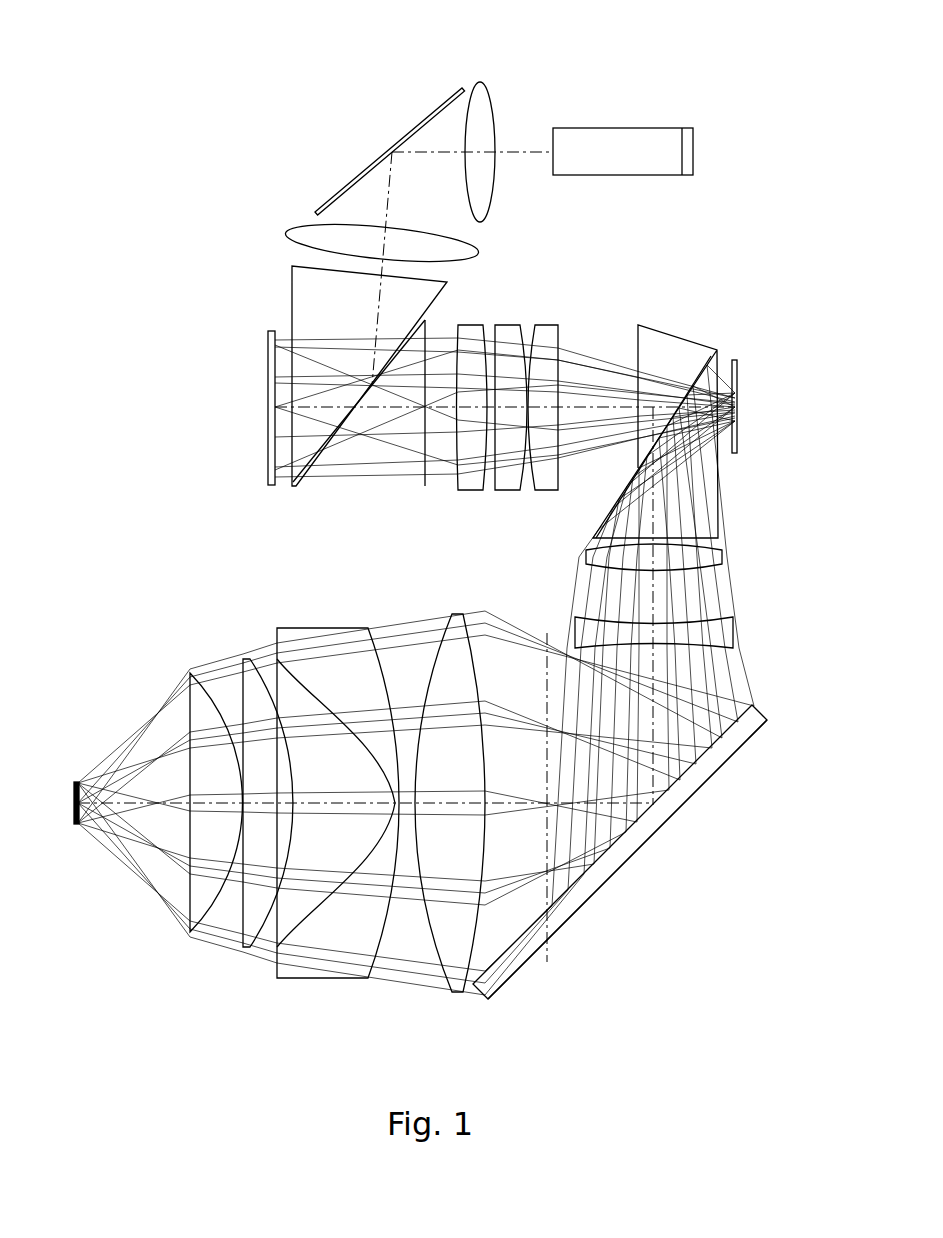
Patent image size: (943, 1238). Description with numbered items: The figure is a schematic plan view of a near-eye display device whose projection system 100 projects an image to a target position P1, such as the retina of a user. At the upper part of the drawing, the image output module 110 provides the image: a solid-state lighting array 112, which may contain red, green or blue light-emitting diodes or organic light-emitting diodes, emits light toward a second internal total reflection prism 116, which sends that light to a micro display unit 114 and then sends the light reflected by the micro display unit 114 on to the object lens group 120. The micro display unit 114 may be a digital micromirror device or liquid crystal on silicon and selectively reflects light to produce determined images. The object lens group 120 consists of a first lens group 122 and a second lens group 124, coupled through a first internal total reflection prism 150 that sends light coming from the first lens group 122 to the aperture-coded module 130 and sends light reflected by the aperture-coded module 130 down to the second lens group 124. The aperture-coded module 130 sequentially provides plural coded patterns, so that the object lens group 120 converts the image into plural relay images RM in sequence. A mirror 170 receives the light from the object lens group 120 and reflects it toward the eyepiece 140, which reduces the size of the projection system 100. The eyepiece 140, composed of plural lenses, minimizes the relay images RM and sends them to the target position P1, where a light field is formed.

The projection system 100 is at (152, 114).
The image output module 110 is at (568, 62).
The solid-state lighting array 112 is at (583, 137).
The micro display unit 114 is at (270, 385).
The second internal total reflection prism 116 is at (312, 280).
The object lens group 120 is at (502, 527).
The first lens group 122 is at (457, 497).
The second lens group 124 is at (572, 548).
The aperture-coded module 130 is at (737, 362).
The eyepiece 140 is at (177, 998).
The first internal total reflection prism 150 is at (713, 488).
The mirror 170 is at (762, 722).
The relay images RM is at (552, 926).
The target position P1 is at (75, 797).